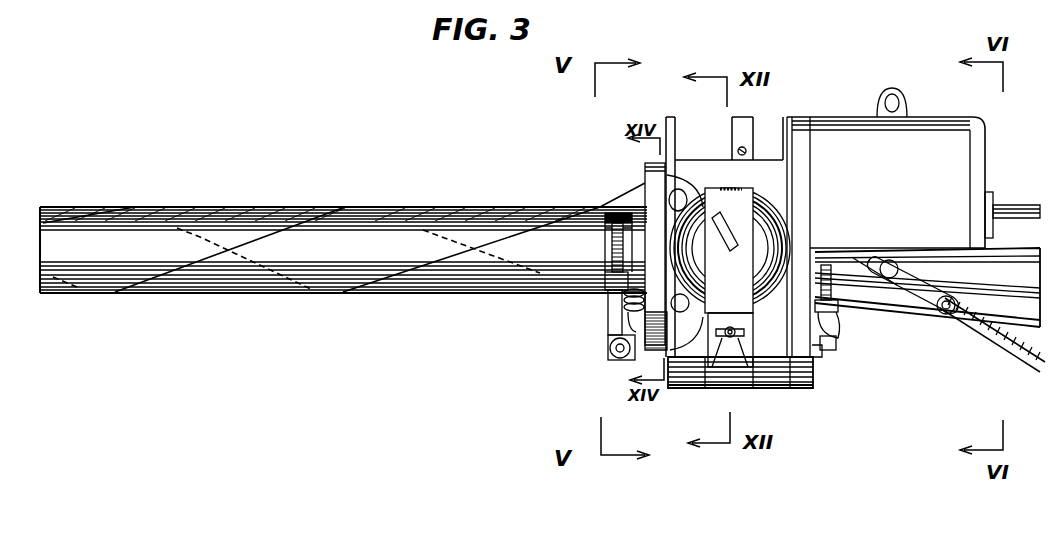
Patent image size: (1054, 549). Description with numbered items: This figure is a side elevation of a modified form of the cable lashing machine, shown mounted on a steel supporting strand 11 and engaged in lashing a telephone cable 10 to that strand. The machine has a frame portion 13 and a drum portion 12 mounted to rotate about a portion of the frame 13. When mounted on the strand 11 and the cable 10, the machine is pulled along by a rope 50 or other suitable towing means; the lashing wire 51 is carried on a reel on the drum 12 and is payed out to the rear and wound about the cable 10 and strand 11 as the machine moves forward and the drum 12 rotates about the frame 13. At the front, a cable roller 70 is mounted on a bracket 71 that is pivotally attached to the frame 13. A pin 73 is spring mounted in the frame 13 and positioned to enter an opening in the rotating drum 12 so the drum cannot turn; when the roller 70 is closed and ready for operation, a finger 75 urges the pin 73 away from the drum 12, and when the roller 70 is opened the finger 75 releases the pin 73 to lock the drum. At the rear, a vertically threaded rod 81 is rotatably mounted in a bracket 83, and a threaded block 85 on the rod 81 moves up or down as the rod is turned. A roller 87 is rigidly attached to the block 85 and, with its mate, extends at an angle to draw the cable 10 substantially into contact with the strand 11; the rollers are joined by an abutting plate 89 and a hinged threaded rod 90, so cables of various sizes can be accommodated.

The telephone cable 10 is at (216, 296).
The supporting strand 11 is at (226, 209).
The drum portion 12 is at (752, 392).
The frame portion 13 is at (628, 190).
The rope 50 is at (992, 338).
The lashing wire 51 is at (190, 263).
The cable roller 70 is at (840, 323).
The bracket 71 is at (822, 350).
The pin 73 is at (836, 337).
The finger 75 is at (831, 290).
The threaded rod 81 is at (607, 238).
The bracket 83 is at (616, 256).
The threaded block 85 is at (636, 298).
The roller 87 is at (610, 315).
The abutting plate 89 is at (608, 336).
The hinged threaded rod 90 is at (611, 350).